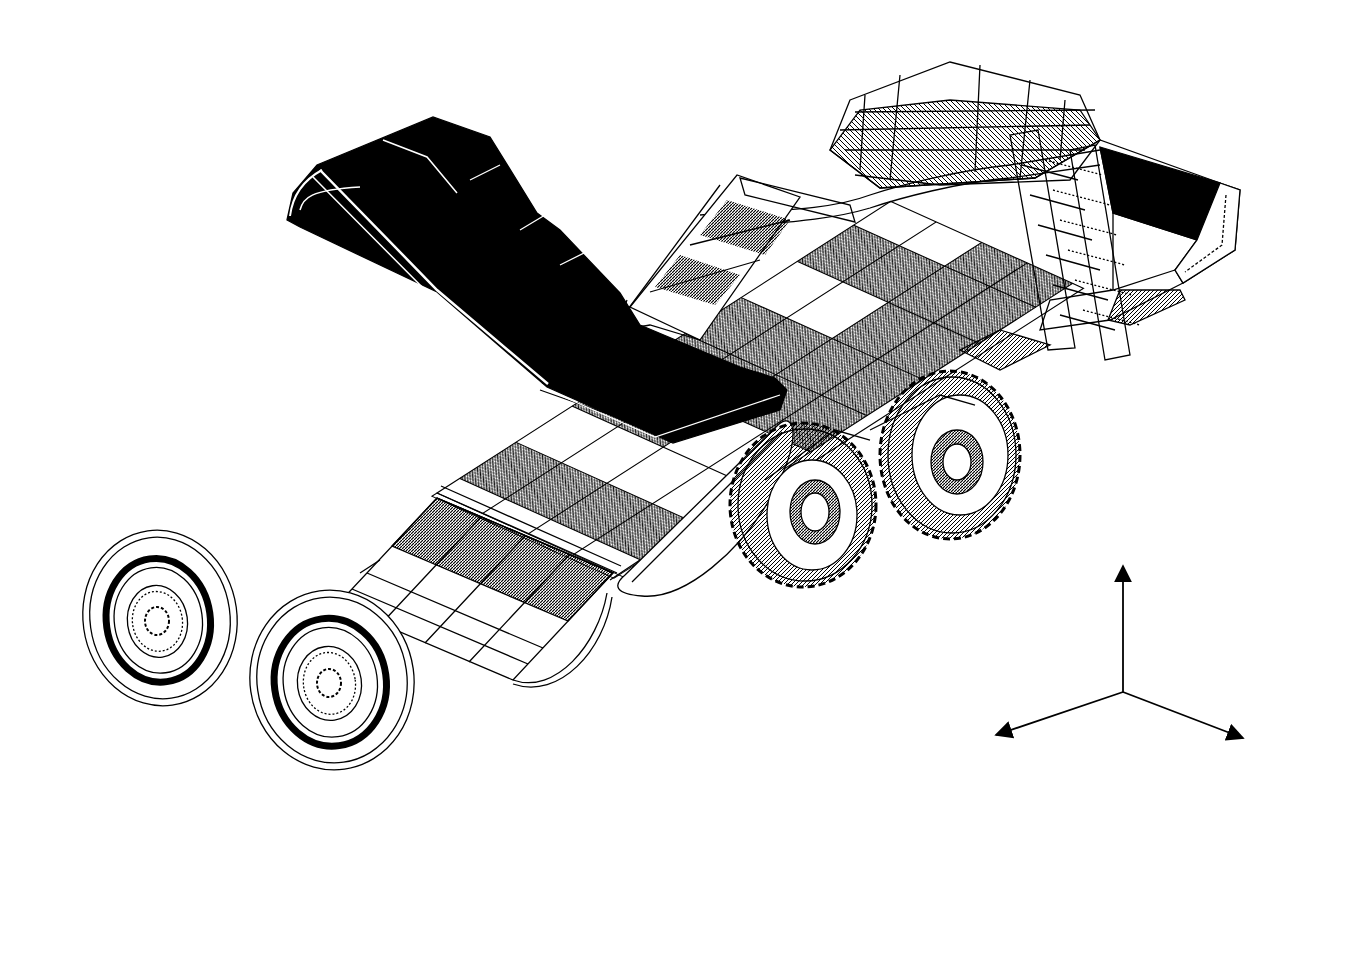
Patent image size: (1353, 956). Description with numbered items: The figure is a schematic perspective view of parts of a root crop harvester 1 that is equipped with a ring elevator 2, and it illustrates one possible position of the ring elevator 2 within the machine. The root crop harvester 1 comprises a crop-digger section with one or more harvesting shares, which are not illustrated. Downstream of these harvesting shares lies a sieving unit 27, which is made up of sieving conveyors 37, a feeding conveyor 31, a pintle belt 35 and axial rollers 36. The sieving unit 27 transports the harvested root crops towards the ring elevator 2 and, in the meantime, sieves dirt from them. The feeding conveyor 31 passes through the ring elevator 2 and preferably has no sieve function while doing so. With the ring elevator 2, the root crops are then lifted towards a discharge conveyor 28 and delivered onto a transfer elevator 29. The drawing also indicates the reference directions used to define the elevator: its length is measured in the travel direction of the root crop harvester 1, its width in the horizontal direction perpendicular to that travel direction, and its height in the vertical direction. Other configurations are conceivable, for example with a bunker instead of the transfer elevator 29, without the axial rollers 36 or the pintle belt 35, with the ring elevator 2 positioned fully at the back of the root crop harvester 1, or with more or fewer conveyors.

The root crop harvester 1 is at (210, 203).
The ring elevator 2 is at (1097, 386).
The sieving unit 27 is at (1226, 255).
The discharge conveyor 28 is at (731, 214).
The transfer elevator 29 is at (456, 312).
The feeding conveyor 31 is at (1010, 350).
The pintle belt 35 is at (1237, 200).
The axial rollers 36 is at (1157, 312).
The sieving conveyors 37 is at (582, 628).